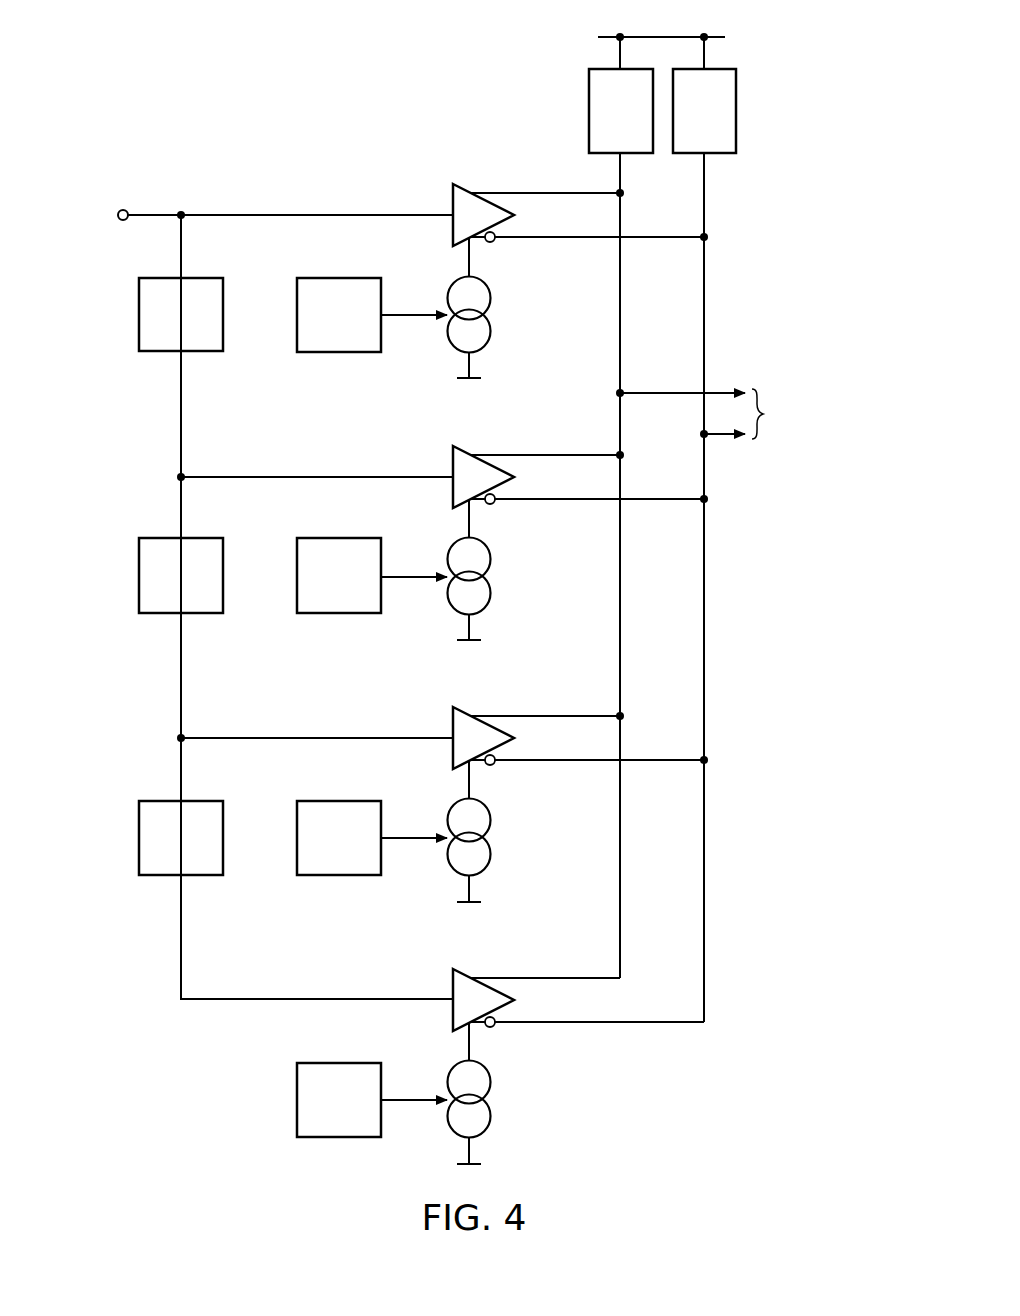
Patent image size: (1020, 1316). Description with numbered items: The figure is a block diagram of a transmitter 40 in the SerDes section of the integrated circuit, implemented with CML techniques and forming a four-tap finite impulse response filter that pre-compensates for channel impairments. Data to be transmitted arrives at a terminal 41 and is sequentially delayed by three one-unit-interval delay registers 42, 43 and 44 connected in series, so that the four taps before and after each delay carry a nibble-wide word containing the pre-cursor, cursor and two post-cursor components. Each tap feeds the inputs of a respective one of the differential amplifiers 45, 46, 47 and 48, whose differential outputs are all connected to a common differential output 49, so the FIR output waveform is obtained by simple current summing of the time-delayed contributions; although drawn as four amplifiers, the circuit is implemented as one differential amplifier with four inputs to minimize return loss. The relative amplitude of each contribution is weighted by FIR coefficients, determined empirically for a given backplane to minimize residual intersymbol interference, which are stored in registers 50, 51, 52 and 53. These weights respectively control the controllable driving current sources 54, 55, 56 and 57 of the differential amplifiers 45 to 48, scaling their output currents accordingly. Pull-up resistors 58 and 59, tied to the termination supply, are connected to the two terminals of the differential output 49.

The transmitter 40 is at (285, 110).
The terminal 41 is at (121, 208).
The 1 UI delay register 42 is at (139, 318).
The 1 UI delay register 43 is at (139, 578).
The 1 UI delay register 44 is at (139, 864).
The differential amplifier 45 is at (453, 200).
The differential amplifier 46 is at (453, 462).
The differential amplifier 47 is at (453, 752).
The differential amplifier 48 is at (453, 1012).
The common differential output 49 is at (747, 414).
The register 50 is at (337, 278).
The register 51 is at (337, 538).
The register 52 is at (337, 875).
The register 53 is at (337, 1137).
The controllable driving current source 54 is at (502, 308).
The controllable driving current source 55 is at (502, 568).
The controllable driving current source 56 is at (502, 846).
The controllable driving current source 57 is at (502, 1106).
The pull-up resistor 58 is at (607, 125).
The pull-up resistor 59 is at (690, 125).